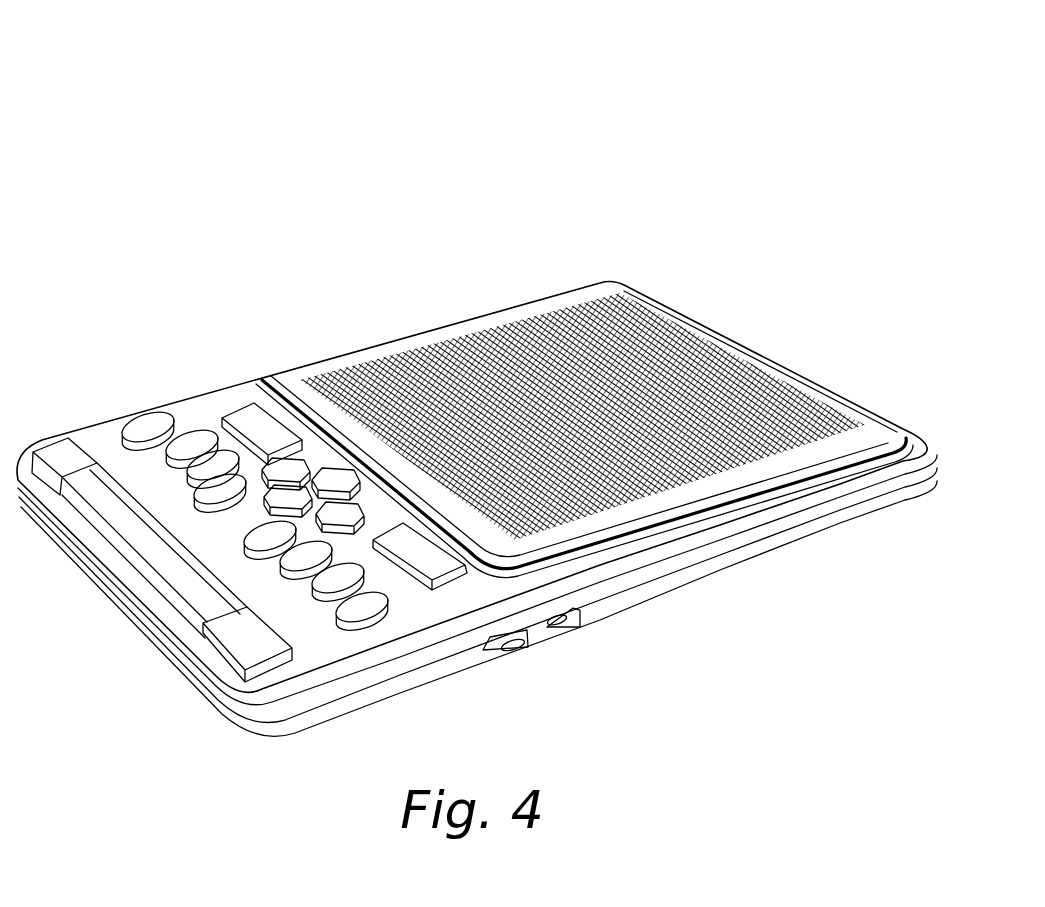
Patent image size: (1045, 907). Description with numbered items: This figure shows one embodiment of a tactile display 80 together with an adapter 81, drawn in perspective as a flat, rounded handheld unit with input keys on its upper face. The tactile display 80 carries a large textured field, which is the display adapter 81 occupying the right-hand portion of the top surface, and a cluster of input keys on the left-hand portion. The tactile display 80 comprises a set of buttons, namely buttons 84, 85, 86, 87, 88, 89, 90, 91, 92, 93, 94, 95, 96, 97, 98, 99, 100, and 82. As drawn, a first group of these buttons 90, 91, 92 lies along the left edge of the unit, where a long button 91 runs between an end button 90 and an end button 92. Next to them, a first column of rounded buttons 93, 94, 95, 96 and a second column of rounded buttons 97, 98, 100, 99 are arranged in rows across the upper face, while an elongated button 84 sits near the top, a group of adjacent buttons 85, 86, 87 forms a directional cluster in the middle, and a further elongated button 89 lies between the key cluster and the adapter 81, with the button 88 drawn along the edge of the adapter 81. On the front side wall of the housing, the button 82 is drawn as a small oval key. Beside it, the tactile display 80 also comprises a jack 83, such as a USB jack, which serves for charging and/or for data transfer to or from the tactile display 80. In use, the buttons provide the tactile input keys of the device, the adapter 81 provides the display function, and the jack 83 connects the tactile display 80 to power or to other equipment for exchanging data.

The tactile display 80 is at (669, 151).
The adapter 81 is at (540, 320).
The button 82 is at (513, 652).
The jack 83 is at (572, 630).
The button 84 is at (262, 425).
The button 85 is at (338, 466).
The button 86 is at (292, 462).
The button 87 is at (350, 505).
The button 88 is at (452, 345).
The button 89 is at (430, 545).
The button 90 is at (54, 455).
The button 91 is at (93, 497).
The button 92 is at (248, 645).
The button 93 is at (148, 430).
The button 94 is at (190, 445).
The button 95 is at (215, 458).
The button 96 is at (195, 488).
The button 97 is at (248, 528).
The button 98 is at (283, 556).
The button 99 is at (388, 612).
The button 100 is at (338, 590).